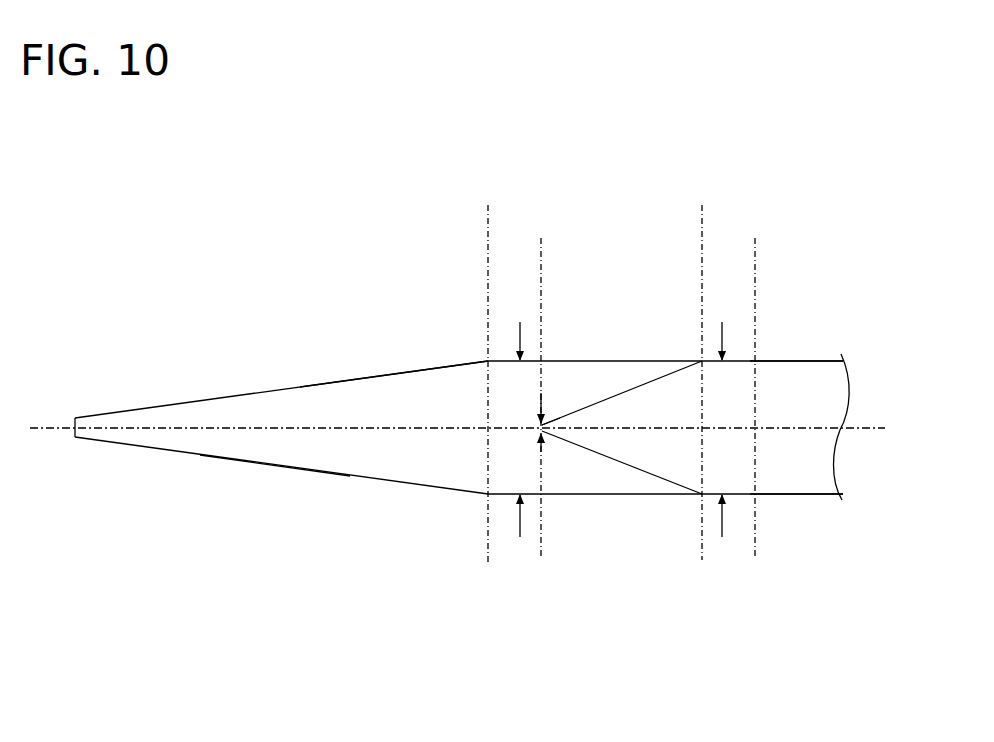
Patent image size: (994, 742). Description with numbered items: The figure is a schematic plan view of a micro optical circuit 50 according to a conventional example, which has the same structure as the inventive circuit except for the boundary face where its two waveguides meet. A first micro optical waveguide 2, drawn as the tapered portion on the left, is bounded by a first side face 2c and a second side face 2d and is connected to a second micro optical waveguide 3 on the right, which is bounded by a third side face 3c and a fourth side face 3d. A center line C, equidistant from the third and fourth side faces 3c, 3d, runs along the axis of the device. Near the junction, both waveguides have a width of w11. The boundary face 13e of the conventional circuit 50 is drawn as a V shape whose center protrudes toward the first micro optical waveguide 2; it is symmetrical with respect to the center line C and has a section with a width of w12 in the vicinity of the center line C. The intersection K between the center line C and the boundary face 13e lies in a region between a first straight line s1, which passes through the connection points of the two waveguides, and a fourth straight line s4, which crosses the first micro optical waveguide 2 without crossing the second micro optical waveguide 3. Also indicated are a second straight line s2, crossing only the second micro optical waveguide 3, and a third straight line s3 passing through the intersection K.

The micro optical circuit 50 is at (844, 212).
The first micro optical waveguide 2 is at (372, 458).
The first side face 2c is at (277, 467).
The second side face 2d is at (385, 372).
The second micro optical waveguide 3 is at (785, 465).
The third side face 3c is at (820, 492).
The fourth side face 3d is at (790, 365).
The boundary face 13e is at (592, 400).
The intersection K is at (546, 424).
The center line C is at (468, 429).
The first straight line s1 is at (700, 367).
The second straight line s2 is at (753, 382).
The third straight line s3 is at (544, 382).
The fourth straight line s4 is at (487, 369).
The width w11 is at (623, 413).
The width w12 is at (548, 408).